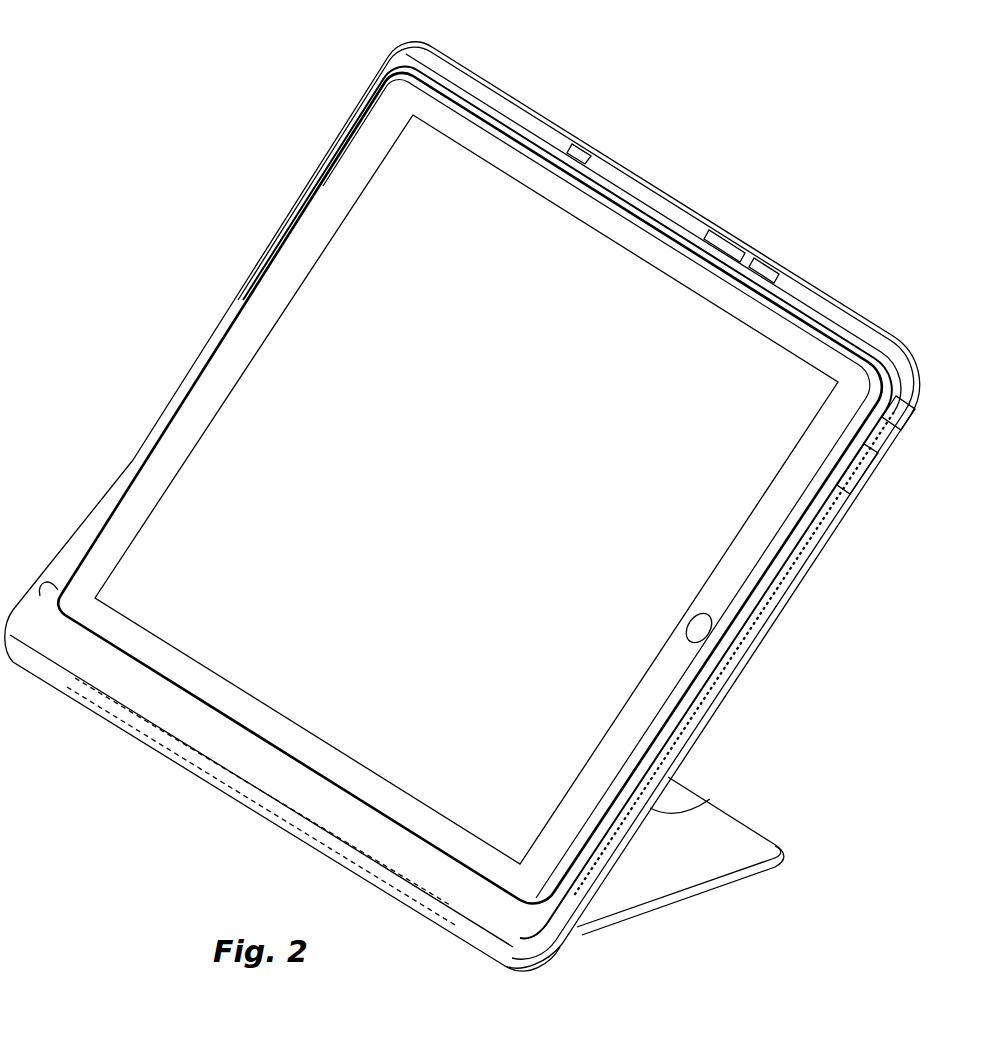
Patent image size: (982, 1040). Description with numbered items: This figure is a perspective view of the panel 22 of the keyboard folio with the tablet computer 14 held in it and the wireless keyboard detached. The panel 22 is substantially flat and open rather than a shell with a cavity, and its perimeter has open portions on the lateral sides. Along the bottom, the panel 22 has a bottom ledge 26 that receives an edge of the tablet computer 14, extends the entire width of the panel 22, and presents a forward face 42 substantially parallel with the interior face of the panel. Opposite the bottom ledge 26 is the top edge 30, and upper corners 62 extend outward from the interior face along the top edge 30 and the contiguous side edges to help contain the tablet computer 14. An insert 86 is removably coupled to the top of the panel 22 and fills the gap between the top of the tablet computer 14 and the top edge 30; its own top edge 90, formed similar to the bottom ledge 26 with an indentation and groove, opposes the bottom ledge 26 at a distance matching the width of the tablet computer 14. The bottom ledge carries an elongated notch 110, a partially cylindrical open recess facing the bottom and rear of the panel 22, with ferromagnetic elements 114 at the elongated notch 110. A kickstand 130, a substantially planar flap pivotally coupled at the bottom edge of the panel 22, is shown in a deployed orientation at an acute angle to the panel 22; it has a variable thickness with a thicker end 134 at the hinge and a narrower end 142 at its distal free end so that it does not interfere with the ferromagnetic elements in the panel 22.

The tablet computer 14 is at (348, 248).
The panel 22 is at (146, 280).
The bottom ledge 26 is at (527, 929).
The top edge 30 is at (528, 112).
The forward face 42 is at (433, 867).
The upper corners 62 is at (398, 64).
The insert 86 is at (704, 244).
The top edge 90 is at (572, 175).
The elongated notch 110 is at (148, 740).
The ferromagnetic elements 114 is at (328, 852).
The kickstand 130 is at (683, 878).
The thicker end 134 is at (598, 928).
The narrower end 142 is at (765, 853).